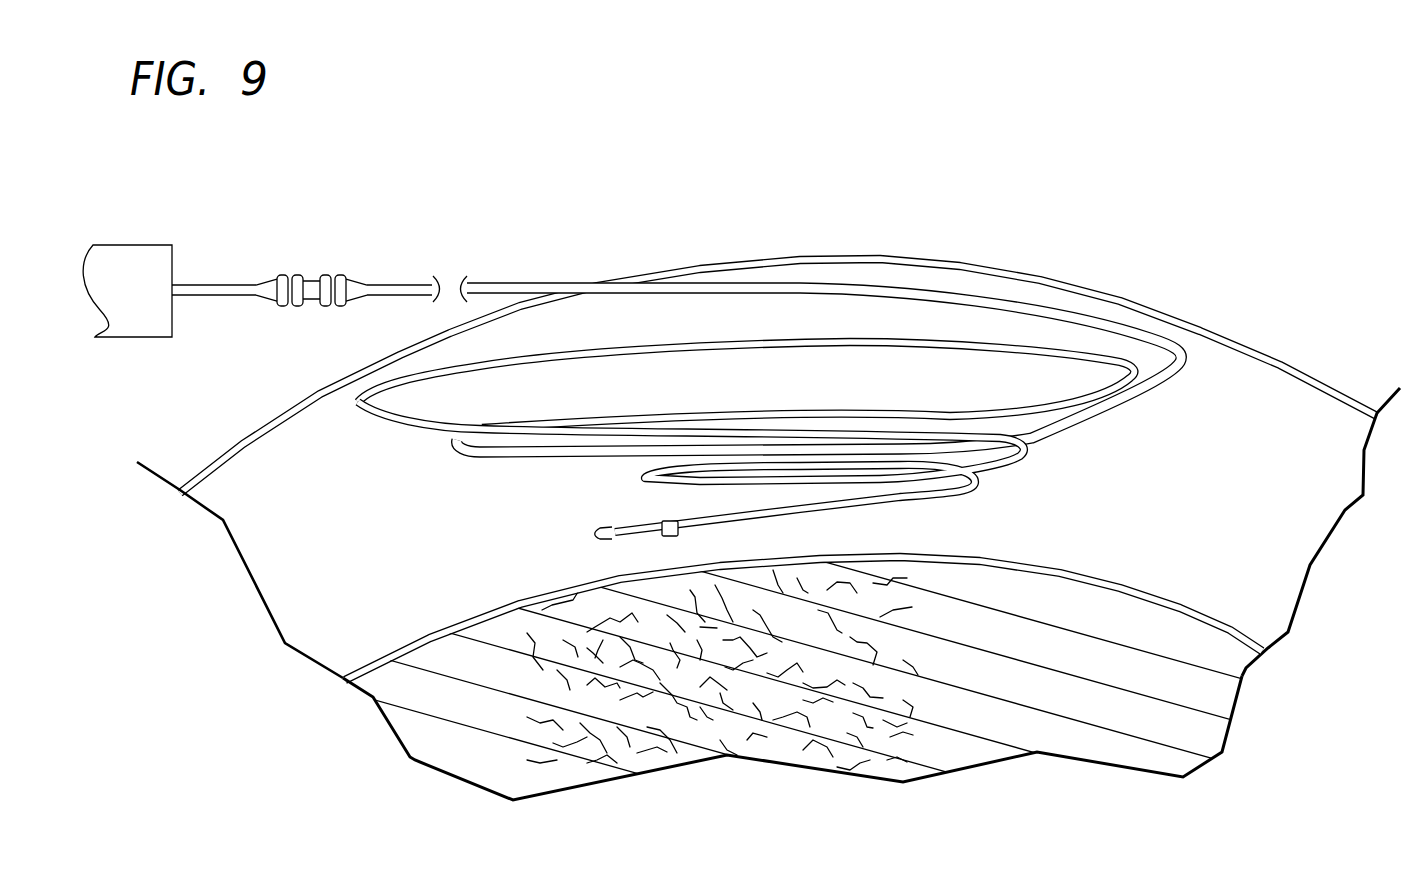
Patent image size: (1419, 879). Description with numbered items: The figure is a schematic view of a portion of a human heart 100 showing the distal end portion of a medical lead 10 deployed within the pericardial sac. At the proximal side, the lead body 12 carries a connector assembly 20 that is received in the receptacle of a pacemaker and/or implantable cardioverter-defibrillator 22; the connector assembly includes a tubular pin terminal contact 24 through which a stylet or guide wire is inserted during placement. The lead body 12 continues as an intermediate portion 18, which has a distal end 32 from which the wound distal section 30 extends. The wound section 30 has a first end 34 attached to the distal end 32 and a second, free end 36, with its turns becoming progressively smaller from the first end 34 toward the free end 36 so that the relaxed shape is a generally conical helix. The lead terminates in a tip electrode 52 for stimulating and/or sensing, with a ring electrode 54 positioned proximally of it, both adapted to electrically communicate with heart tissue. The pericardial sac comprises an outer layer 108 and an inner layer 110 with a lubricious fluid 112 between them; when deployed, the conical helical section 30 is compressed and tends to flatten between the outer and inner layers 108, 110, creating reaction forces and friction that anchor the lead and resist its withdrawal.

The medical lead 10 is at (659, 340).
The lead body 12 is at (796, 348).
The intermediate portion 18 is at (572, 283).
The connector assembly 20 is at (355, 278).
The pacemaker and/or implantable cardioverter-defibrillator 22 is at (150, 245).
The tubular pin terminal contact 24 is at (215, 296).
The wound distal section 30 is at (796, 368).
The distal end of the intermediate portion 32 is at (765, 283).
The first end of the wound section 34 is at (910, 338).
The second, free end of the wound section 36 is at (826, 505).
The tip electrode 52 is at (598, 533).
The ring electrode 54 is at (666, 521).
The human heart 100 is at (768, 512).
The outer layer of the pericardial sac 108 is at (1345, 384).
The inner layer of the pericardial sac 110 is at (1157, 600).
The lubricious fluid 112 is at (1243, 382).